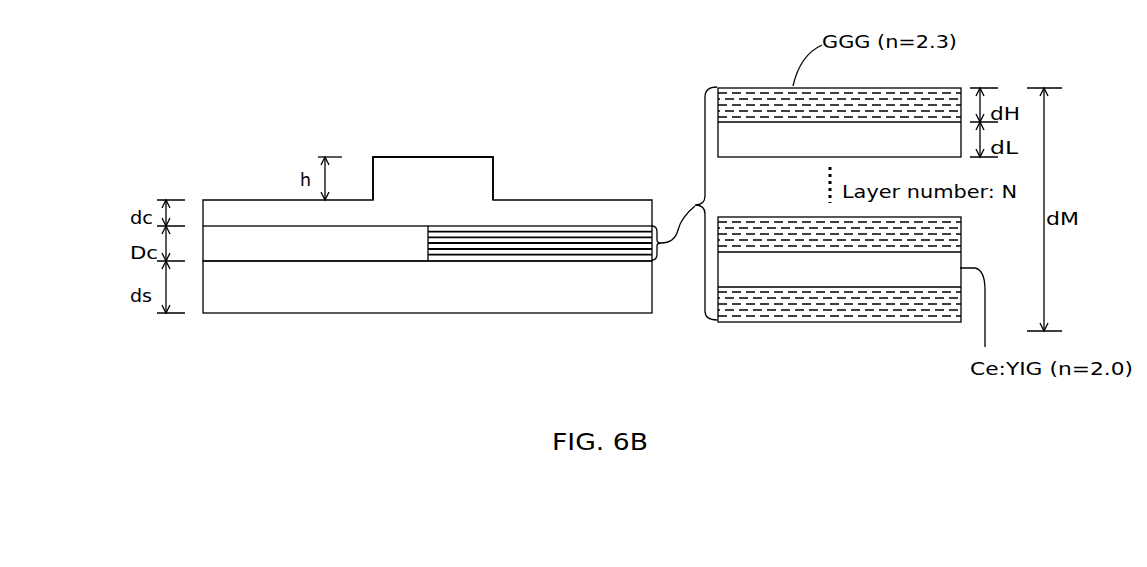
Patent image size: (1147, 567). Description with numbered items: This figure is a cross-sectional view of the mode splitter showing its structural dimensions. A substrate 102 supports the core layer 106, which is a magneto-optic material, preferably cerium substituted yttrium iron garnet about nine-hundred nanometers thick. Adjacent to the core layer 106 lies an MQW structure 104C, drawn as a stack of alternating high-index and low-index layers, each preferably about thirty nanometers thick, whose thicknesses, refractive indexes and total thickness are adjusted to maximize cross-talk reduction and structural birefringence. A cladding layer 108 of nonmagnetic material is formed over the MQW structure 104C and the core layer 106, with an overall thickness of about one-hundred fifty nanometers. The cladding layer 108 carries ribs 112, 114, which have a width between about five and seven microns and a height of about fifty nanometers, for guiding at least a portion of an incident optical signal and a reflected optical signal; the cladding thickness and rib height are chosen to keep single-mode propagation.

The GGG substrate 102 is at (245, 313).
The MQW structure 104C is at (428, 241).
The core layer 106 is at (203, 240).
The cladding layer 108 is at (544, 200).
The rib 112 is at (430, 157).
The rib 114 is at (430, 157).